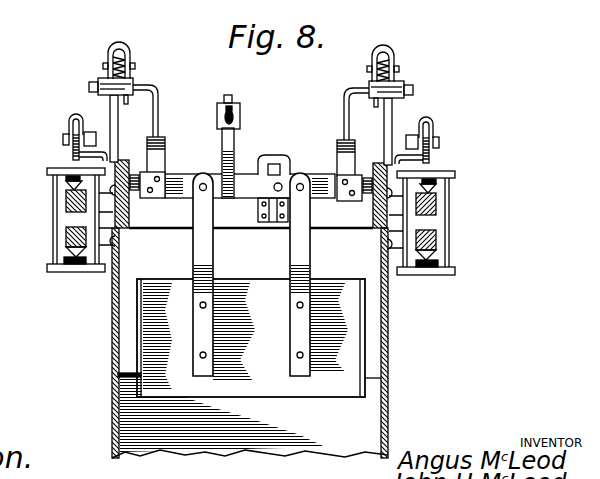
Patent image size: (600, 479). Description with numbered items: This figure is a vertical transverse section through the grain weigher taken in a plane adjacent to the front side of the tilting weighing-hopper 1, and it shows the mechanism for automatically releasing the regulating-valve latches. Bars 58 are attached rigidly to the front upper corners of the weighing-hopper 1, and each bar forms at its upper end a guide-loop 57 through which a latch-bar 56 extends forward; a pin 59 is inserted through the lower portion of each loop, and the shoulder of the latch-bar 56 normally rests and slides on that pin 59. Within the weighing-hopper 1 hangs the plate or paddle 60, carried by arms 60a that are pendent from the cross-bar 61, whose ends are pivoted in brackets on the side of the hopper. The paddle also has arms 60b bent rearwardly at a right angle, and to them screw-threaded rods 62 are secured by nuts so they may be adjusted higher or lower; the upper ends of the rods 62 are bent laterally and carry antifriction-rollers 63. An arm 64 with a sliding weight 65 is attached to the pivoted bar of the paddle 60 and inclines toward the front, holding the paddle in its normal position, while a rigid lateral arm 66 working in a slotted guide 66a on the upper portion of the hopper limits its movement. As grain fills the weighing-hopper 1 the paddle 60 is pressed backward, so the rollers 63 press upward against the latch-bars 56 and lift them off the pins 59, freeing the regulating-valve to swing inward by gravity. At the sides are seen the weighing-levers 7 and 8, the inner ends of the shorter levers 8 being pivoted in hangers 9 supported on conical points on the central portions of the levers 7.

The weighing-hopper 1 is at (112, 338).
The weighing-levers 7 is at (437, 210).
The weighing-levers 8 is at (66, 240).
The hangers 9 is at (56, 206).
The latch-bars 56 is at (113, 55).
The guide-loops 57 is at (117, 44).
The bars 58 is at (110, 118).
The pin 59 is at (134, 64).
The plate 60 is at (249, 338).
The arms 60a is at (214, 256).
The arms 60b is at (166, 137).
The cross-bar 61 is at (250, 198).
The screw-threaded rods 62 is at (155, 106).
The antifriction-rollers 63 is at (100, 82).
The arm 64 is at (229, 149).
The sliding weight 65 is at (241, 116).
The lateral arm 66 is at (283, 184).
The slotted guide 66a is at (272, 160).